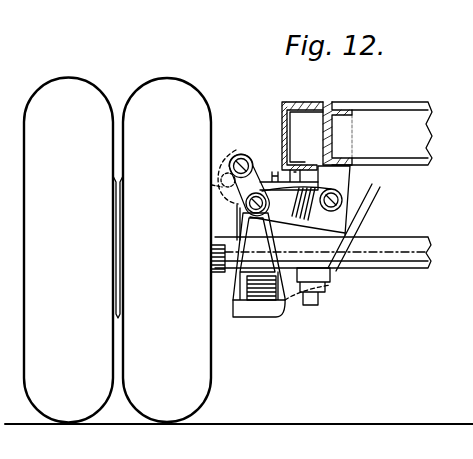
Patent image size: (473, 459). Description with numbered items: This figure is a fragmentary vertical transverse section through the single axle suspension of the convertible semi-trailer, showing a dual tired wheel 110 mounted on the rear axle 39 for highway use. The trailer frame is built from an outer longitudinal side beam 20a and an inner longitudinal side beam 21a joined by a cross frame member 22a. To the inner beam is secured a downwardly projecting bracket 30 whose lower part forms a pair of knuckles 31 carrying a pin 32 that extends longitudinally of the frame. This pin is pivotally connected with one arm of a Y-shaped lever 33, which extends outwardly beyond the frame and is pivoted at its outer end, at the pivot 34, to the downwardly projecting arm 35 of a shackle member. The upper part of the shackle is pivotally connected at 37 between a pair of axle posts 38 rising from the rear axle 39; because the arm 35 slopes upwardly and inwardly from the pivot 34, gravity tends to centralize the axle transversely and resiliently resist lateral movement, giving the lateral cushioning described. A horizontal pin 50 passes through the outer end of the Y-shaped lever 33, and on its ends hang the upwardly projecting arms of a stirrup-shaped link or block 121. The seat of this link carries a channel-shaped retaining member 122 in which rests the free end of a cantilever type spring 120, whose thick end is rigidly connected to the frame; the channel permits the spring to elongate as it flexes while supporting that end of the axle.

The dual tired wheel 110 is at (215, 398).
The outer longitudinal side beam 20a is at (318, 101).
The inner longitudinal side beam 21a is at (343, 108).
The cross frame member 22a is at (428, 102).
The bracket 30 is at (334, 133).
The knuckle 31 is at (365, 180).
The pin 32 is at (356, 196).
The Y-shaped lever 33 is at (355, 223).
The pivot 34 is at (212, 185).
The arm of shackle member 35 is at (237, 151).
The pivotal connection 37 is at (248, 152).
The axle post 38 is at (230, 170).
The rear axle 39 is at (388, 260).
The horizontal pin 50 is at (237, 204).
The cantilever type spring 120 is at (262, 312).
The stirrup-shaped link or block 121 is at (283, 312).
The channel-shaped retaining member 122 is at (300, 316).